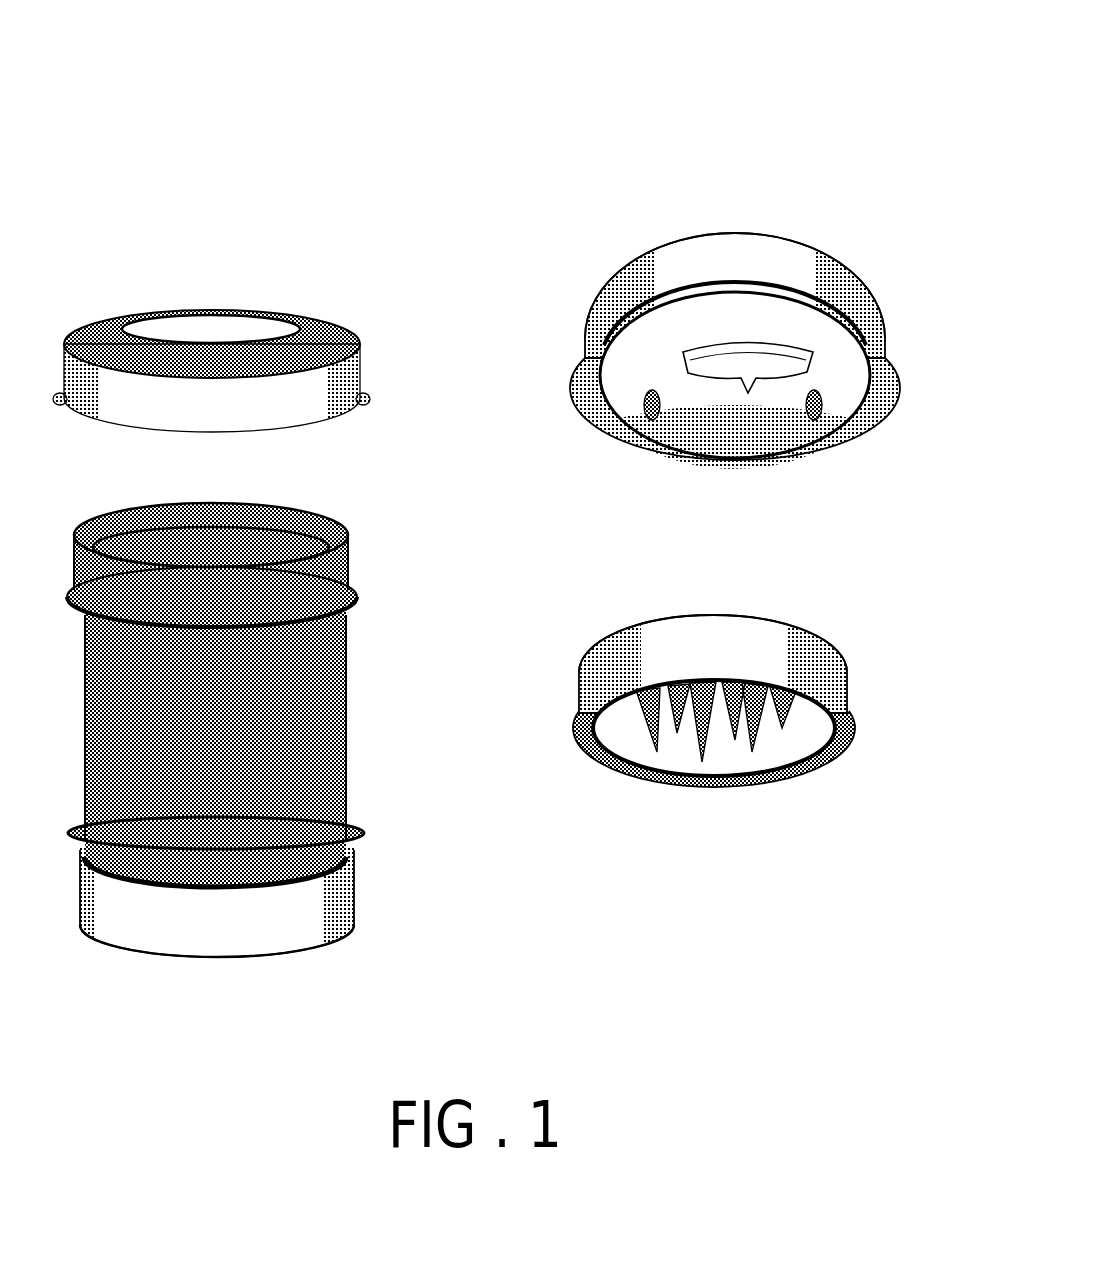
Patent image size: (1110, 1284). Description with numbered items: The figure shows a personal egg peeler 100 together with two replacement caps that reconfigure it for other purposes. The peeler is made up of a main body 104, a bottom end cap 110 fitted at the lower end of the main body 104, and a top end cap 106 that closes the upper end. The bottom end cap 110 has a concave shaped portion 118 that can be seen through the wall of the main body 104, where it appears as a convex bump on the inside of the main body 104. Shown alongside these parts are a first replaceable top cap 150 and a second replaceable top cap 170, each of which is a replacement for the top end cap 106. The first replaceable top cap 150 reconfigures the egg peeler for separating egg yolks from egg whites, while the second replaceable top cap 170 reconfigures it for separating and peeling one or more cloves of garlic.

The container assembly 100 is at (872, 96).
The main body 104 is at (343, 645).
The top end cap 106 is at (323, 325).
The bottom end cap 110 is at (343, 902).
The concave shaped portion 118 is at (213, 858).
The first replaceable top cap 150 is at (857, 288).
The second replaceable top cap 170 is at (822, 665).